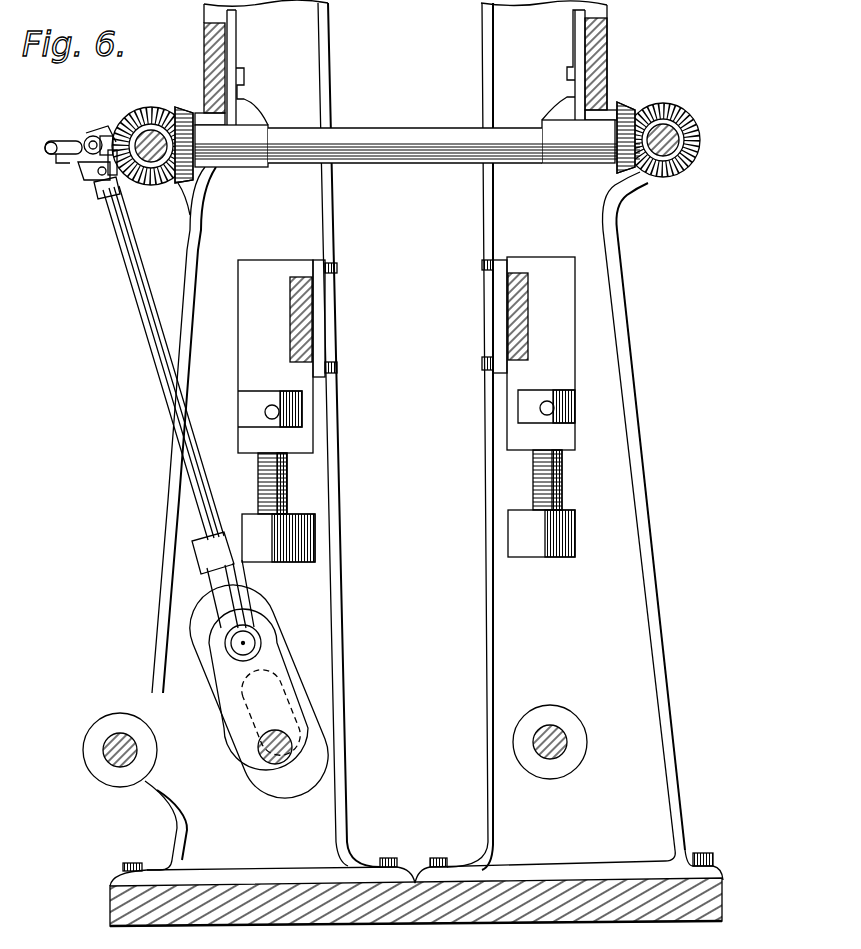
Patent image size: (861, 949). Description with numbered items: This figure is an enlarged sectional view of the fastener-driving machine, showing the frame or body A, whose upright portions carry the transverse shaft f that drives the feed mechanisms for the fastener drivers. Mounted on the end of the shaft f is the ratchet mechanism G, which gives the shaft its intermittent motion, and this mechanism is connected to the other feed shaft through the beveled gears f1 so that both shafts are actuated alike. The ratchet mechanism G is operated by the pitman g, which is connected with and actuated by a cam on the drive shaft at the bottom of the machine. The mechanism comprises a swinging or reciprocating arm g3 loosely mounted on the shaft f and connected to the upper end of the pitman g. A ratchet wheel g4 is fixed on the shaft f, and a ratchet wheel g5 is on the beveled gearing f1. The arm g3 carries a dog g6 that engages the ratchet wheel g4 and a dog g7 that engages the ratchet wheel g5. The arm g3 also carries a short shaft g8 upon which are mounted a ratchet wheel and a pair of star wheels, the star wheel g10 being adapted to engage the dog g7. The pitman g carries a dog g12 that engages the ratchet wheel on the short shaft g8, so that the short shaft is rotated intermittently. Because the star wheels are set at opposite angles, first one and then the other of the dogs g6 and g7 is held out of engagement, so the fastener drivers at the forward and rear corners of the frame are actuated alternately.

The frame or body A is at (333, 210).
The ratchet mechanism G is at (151, 136).
The pitman g is at (116, 246).
The swinging or reciprocating arm g3 is at (50, 145).
The ratchet wheel g4 is at (50, 160).
The ratchet wheel g5 is at (157, 108).
The dog g6 is at (107, 125).
The dog g7 is at (107, 128).
The short shaft g8 is at (56, 165).
The star wheel g10 is at (70, 165).
The dog g12 is at (87, 131).
The transverse shaft f is at (157, 165).
The beveled gears f1 is at (167, 183).